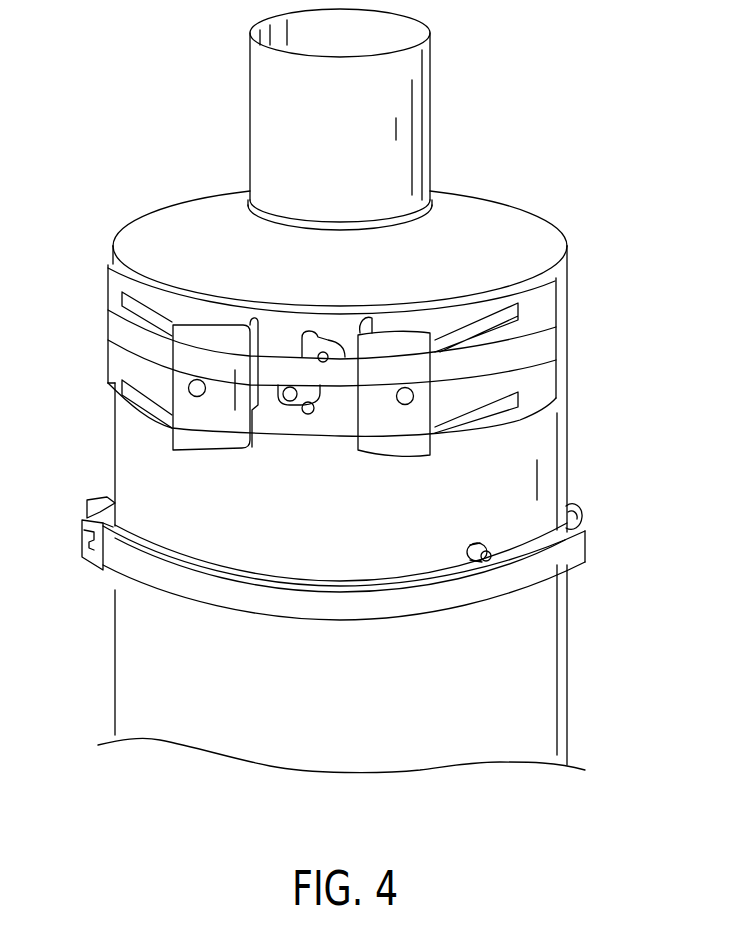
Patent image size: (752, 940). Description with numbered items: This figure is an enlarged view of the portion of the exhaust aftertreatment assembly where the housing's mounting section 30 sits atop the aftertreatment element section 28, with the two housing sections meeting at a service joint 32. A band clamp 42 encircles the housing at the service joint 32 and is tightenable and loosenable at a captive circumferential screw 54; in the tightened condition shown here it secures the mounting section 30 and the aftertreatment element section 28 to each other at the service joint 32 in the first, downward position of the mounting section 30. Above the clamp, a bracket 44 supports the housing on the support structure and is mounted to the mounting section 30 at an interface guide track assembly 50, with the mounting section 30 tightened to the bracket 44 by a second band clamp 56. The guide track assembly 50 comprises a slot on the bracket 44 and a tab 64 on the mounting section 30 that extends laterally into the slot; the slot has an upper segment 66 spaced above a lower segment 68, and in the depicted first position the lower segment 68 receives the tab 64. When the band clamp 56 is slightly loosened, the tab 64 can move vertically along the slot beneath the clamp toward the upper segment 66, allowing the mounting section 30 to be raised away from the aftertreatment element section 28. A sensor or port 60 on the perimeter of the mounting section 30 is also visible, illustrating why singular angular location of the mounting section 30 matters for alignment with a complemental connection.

The aftertreatment element section 28 is at (568, 702).
The mounting section 30 is at (566, 441).
The service joint 32 is at (573, 509).
The band clamp 42 is at (578, 556).
The bracket 44 is at (287, 320).
The interface guide track assembly 50 is at (300, 350).
The captive circumferential screw 54 is at (100, 505).
The band clamp 56 is at (560, 328).
The sensor or port 60 is at (497, 547).
The tab 64 is at (308, 413).
The upper segment 66 is at (325, 346).
The lower segment 68 is at (291, 400).